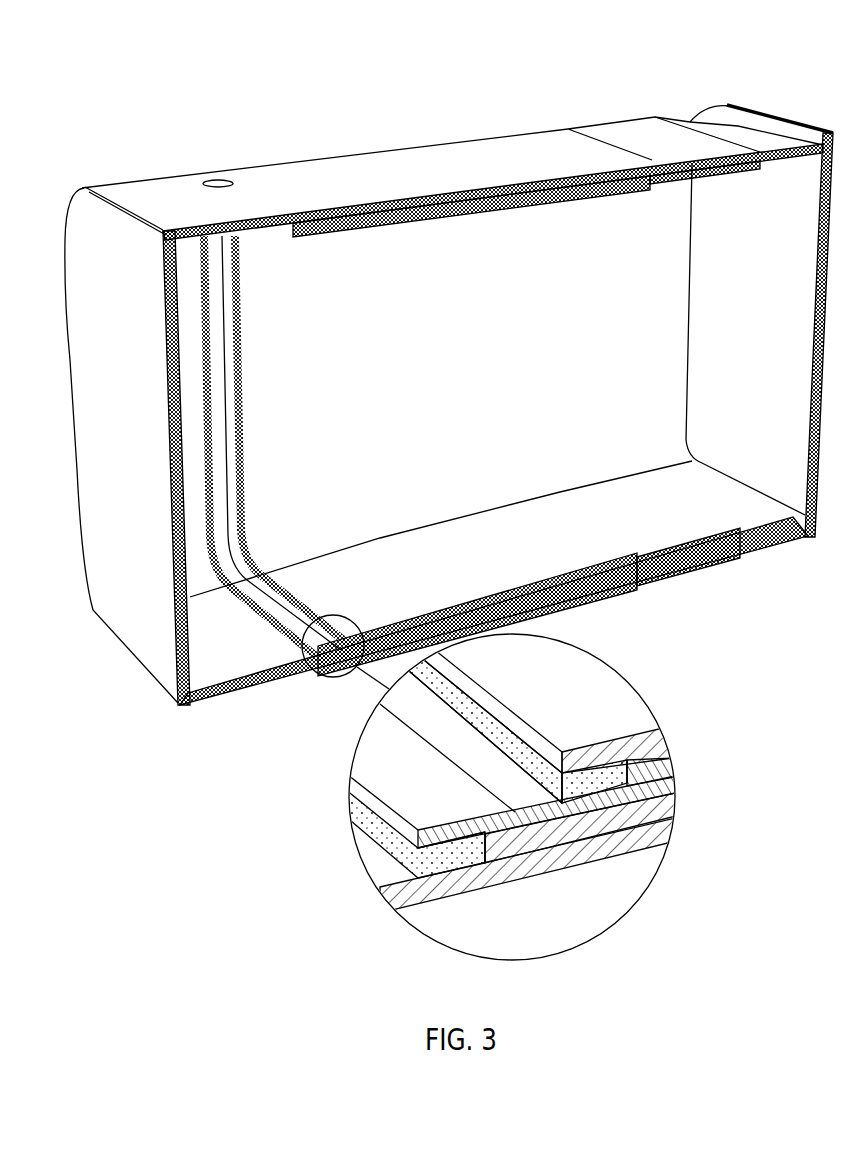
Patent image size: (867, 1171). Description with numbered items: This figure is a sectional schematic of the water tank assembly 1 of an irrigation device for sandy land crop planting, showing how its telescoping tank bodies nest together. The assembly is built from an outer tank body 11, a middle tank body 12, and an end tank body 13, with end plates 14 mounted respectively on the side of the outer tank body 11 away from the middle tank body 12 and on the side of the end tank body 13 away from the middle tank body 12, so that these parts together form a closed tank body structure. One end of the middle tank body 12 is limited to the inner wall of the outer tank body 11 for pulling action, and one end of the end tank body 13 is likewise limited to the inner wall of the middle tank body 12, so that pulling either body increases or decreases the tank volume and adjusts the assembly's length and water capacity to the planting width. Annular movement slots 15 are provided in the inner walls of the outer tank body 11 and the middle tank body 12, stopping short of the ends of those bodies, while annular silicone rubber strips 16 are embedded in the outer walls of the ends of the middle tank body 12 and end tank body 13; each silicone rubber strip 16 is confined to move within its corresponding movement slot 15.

The water tank assembly 1 is at (420, 104).
The outer tank body 11 is at (320, 172).
The middle tank body 12 is at (626, 133).
The end tank body 13 is at (733, 132).
The end plate 14 is at (105, 226).
The movement slot 15 is at (527, 814).
The silicone rubber strip 16 is at (448, 860).